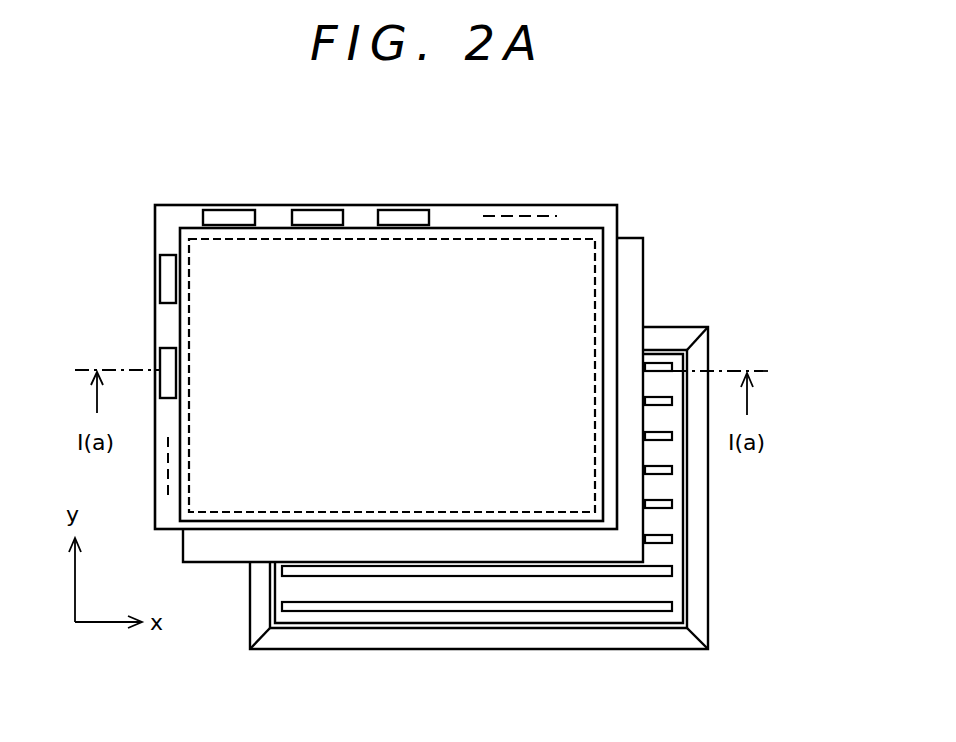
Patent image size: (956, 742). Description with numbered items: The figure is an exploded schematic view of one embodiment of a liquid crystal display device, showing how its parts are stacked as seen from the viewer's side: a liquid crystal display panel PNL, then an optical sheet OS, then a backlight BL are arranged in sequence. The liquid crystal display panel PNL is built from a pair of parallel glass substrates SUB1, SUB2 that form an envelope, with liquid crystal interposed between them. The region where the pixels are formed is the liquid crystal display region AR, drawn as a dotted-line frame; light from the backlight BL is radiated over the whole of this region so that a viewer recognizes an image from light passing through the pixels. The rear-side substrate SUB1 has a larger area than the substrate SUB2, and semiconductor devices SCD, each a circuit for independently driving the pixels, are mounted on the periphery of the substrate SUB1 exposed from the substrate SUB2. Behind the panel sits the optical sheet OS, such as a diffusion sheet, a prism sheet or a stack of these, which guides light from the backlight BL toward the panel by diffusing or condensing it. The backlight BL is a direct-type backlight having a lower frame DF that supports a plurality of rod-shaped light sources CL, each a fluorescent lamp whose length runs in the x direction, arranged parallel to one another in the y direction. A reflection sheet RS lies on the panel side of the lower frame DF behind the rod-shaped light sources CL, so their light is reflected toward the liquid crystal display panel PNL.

The liquid crystal display panel PNL is at (572, 193).
The substrate SUB1 is at (155, 283).
The substrate SUB2 is at (192, 227).
The semiconductor device SCD is at (408, 210).
The liquid crystal display region AR is at (392, 375).
The optical sheet OS is at (662, 277).
The backlight BL is at (724, 585).
The reflection sheet RS is at (672, 485).
The rod-shaped light source CL is at (418, 576).
The lower frame DF is at (625, 649).